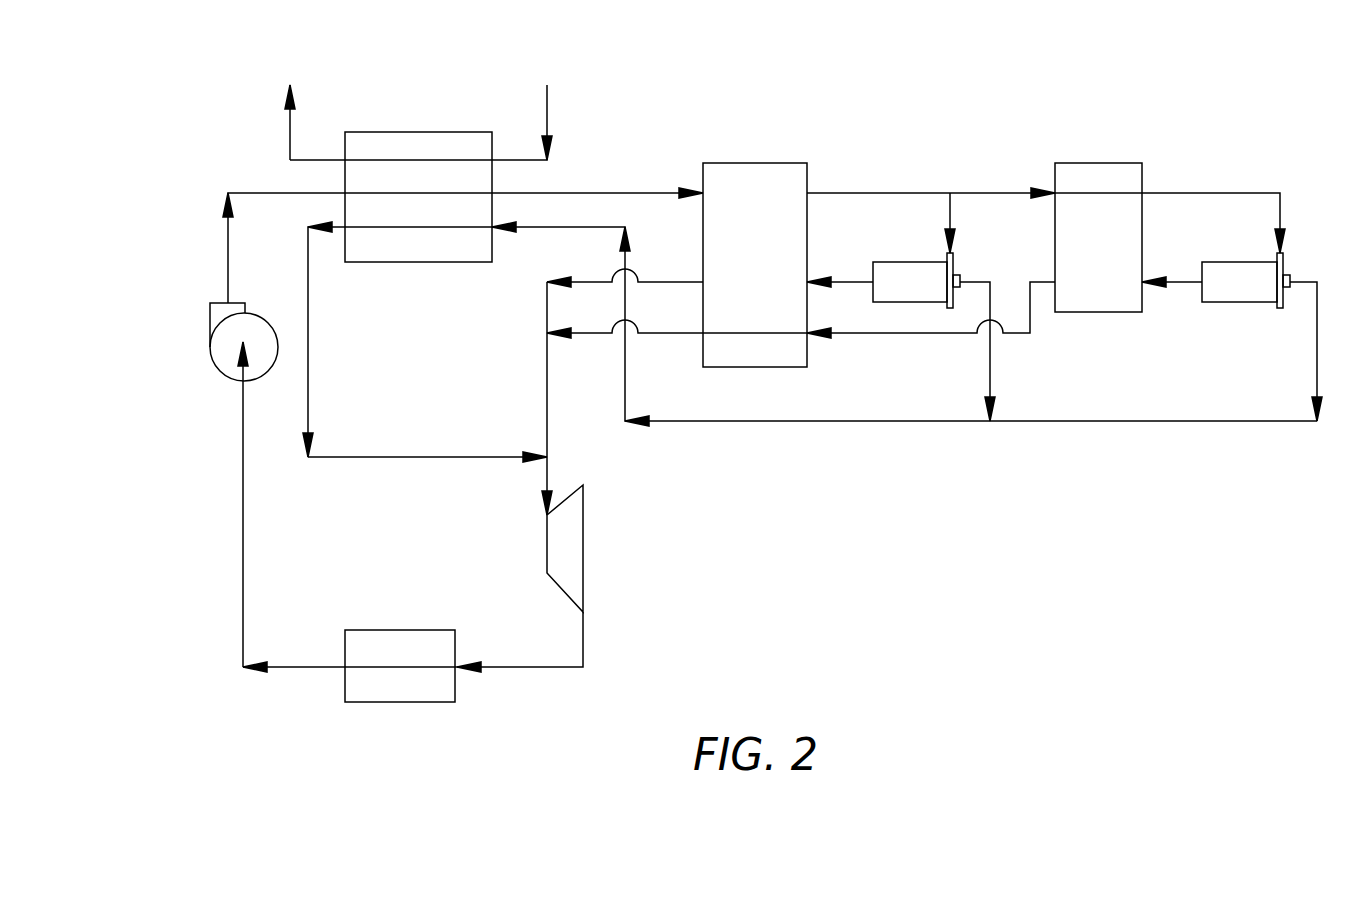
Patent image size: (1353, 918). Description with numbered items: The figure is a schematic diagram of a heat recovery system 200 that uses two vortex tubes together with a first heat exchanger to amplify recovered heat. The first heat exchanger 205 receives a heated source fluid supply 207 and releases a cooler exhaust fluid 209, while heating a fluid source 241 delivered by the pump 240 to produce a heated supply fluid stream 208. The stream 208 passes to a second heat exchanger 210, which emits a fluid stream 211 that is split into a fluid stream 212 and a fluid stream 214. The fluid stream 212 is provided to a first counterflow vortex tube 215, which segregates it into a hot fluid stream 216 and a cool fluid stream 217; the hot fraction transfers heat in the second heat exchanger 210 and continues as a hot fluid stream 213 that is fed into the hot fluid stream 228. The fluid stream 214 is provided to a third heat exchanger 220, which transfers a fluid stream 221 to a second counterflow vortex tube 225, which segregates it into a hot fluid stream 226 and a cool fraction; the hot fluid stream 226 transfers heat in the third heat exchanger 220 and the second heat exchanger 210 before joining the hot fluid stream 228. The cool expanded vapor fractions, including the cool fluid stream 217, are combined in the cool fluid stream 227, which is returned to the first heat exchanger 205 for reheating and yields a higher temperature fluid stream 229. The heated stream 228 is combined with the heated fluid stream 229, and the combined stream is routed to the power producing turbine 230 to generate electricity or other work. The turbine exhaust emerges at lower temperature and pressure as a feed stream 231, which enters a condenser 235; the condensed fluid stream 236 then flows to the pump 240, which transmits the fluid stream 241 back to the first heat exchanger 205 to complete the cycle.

The system 200 is at (845, 545).
The first heat exchanger 205 is at (418, 132).
The heated source fluid supply 207 is at (547, 122).
The heated supply fluid stream 208 is at (597, 193).
The cooler exhaust fluid 209 is at (290, 123).
The second heat exchanger 210 is at (755, 163).
The fluid stream 211 is at (855, 193).
The fluid stream 212 is at (952, 210).
The hot fluid stream 213 is at (670, 280).
The fluid stream 214 is at (1010, 192).
The first counterflow vortex tube 215 is at (908, 302).
The hot fluid stream 216 is at (840, 282).
The cool fluid stream 217 is at (990, 357).
The third heat exchanger 220 is at (1098, 163).
The fluid stream 221 is at (1217, 193).
The second counterflow vortex tube 225 is at (1238, 302).
The hot fluid stream 226 is at (670, 333).
The cool fluid stream 227 is at (558, 228).
The hot fluid stream 228 is at (547, 385).
The heated fluid stream 229 is at (427, 458).
The turbine 230 is at (583, 545).
The feed stream 231 is at (513, 667).
The condenser 235 is at (400, 703).
The condensed fluid stream 236 is at (243, 568).
The pump 240 is at (210, 345).
The fluid stream 241 is at (272, 192).